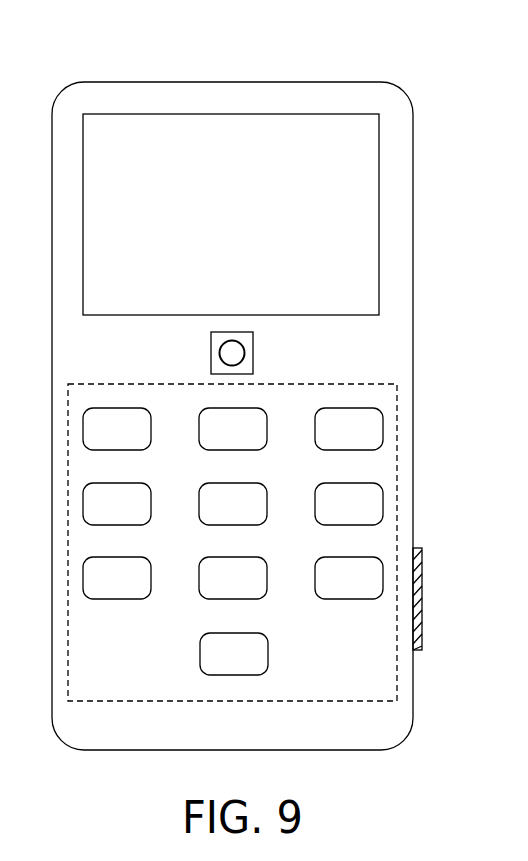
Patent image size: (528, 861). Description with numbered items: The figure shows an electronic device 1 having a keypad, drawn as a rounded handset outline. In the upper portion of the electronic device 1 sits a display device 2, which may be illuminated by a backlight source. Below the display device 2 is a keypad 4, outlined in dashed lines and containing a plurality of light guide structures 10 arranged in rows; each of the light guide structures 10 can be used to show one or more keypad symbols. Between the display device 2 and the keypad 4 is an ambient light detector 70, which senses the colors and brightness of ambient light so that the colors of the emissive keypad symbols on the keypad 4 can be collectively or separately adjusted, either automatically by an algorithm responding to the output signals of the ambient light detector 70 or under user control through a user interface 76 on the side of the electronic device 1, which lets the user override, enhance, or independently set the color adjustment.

The electronic device 1 is at (432, 60).
The display device 2 is at (374, 192).
The keypad 4 is at (261, 560).
The light guide structure 10 is at (227, 670).
The ambient light detector 70 is at (254, 351).
The user interface 76 is at (423, 620).